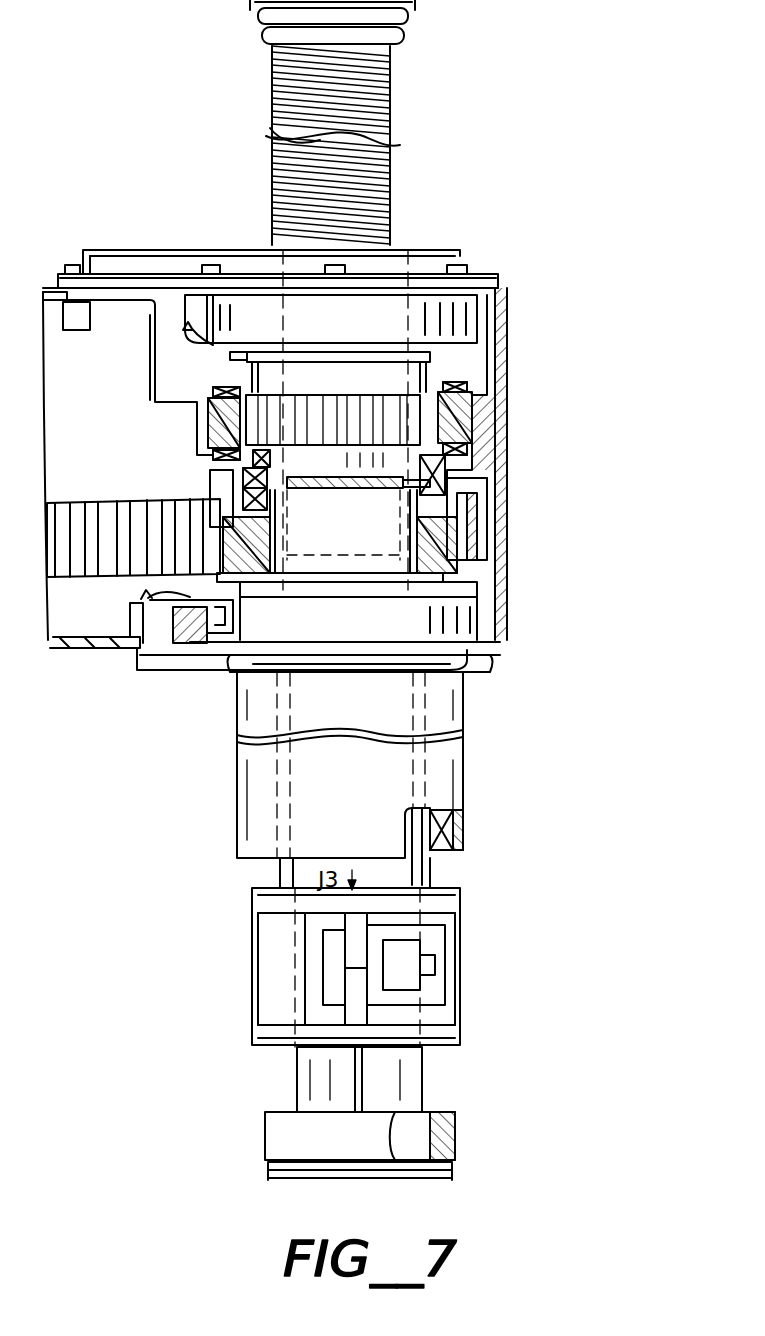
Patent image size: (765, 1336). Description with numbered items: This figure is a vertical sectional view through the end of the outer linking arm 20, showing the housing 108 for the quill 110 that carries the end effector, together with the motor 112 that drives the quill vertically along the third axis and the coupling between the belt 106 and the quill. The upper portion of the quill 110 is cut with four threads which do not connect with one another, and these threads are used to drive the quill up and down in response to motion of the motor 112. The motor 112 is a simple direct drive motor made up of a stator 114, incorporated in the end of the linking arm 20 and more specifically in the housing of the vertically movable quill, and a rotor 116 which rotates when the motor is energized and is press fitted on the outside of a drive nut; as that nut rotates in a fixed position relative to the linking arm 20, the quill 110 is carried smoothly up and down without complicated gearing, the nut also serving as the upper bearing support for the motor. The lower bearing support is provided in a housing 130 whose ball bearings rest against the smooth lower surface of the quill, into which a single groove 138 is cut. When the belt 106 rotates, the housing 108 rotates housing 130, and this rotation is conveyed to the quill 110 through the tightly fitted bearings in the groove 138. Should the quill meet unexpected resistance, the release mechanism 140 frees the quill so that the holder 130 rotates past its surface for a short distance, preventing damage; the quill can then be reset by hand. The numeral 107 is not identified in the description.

The linking arm 20 is at (88, 650).
The belt 106 is at (500, 552).
The gear hub 107 is at (483, 539).
The housing 108 is at (430, 872).
The quill 110 is at (400, 192).
The motor 112 is at (480, 410).
The stator 114 is at (507, 460).
The rotor 116 is at (507, 395).
The housing 130 is at (250, 965).
The groove 138 is at (355, 1080).
The release mechanism 140 is at (378, 970).